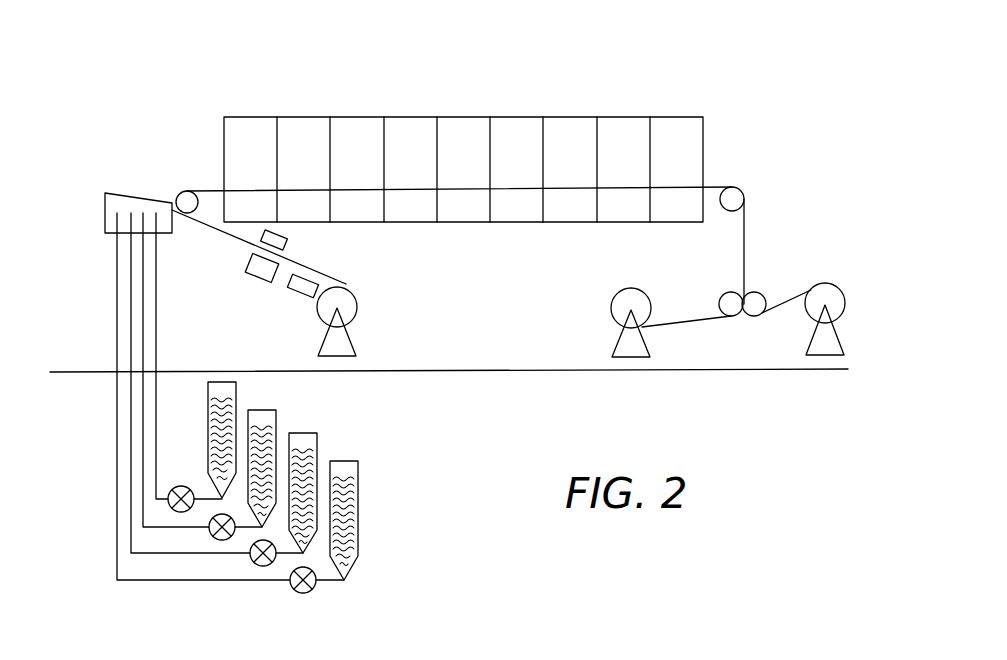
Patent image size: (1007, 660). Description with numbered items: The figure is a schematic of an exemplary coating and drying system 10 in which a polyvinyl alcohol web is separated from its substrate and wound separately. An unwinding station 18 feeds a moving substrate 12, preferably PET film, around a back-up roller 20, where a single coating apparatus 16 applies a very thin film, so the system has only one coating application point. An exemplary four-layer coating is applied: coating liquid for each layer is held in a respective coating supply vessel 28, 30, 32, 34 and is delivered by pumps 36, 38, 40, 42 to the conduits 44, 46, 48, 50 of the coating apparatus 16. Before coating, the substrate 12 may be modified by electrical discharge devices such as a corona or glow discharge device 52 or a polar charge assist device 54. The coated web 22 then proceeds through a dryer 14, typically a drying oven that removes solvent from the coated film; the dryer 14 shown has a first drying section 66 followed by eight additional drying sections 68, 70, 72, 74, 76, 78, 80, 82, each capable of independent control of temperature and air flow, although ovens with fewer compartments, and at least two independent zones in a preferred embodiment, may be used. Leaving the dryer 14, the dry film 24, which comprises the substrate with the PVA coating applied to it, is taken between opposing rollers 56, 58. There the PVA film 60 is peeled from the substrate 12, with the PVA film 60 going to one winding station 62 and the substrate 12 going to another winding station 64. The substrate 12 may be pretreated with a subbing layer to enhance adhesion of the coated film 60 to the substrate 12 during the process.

The coating and drying system 10 is at (584, 83).
The moving substrate 12 is at (232, 234).
The dryer 14 is at (372, 106).
The coating apparatus 16 is at (105, 207).
The unwinding station 18 is at (350, 306).
The back-up roller 20 is at (178, 192).
The coated web 22 is at (200, 188).
The dry film 24 is at (745, 213).
The coating supply vessel 28 is at (237, 394).
The coating supply vessel 30 is at (277, 420).
The coating supply vessel 32 is at (318, 447).
The coating supply vessel 34 is at (358, 500).
The pump 36 is at (180, 486).
The pump 38 is at (213, 536).
The pump 40 is at (252, 562).
The pump 42 is at (307, 593).
The conduit 44 is at (156, 345).
The conduit 46 is at (143, 314).
The conduit 48 is at (131, 285).
The conduit 50 is at (117, 262).
The corona or glow discharge device 52 is at (296, 293).
The polar charge assist device 54 is at (288, 249).
The opposing roller 56 is at (731, 292).
The opposing roller 58 is at (759, 292).
The PVA film 60 is at (783, 306).
The winding station 62 is at (832, 283).
The winding station 64 is at (627, 289).
The first drying section 66 is at (266, 158).
The drying section 68 is at (319, 158).
The drying section 70 is at (341, 158).
The drying section 72 is at (426, 158).
The drying section 74 is at (479, 158).
The drying section 76 is at (501, 158).
The drying section 78 is at (586, 158).
The drying section 80 is at (639, 158).
The drying section 82 is at (661, 158).